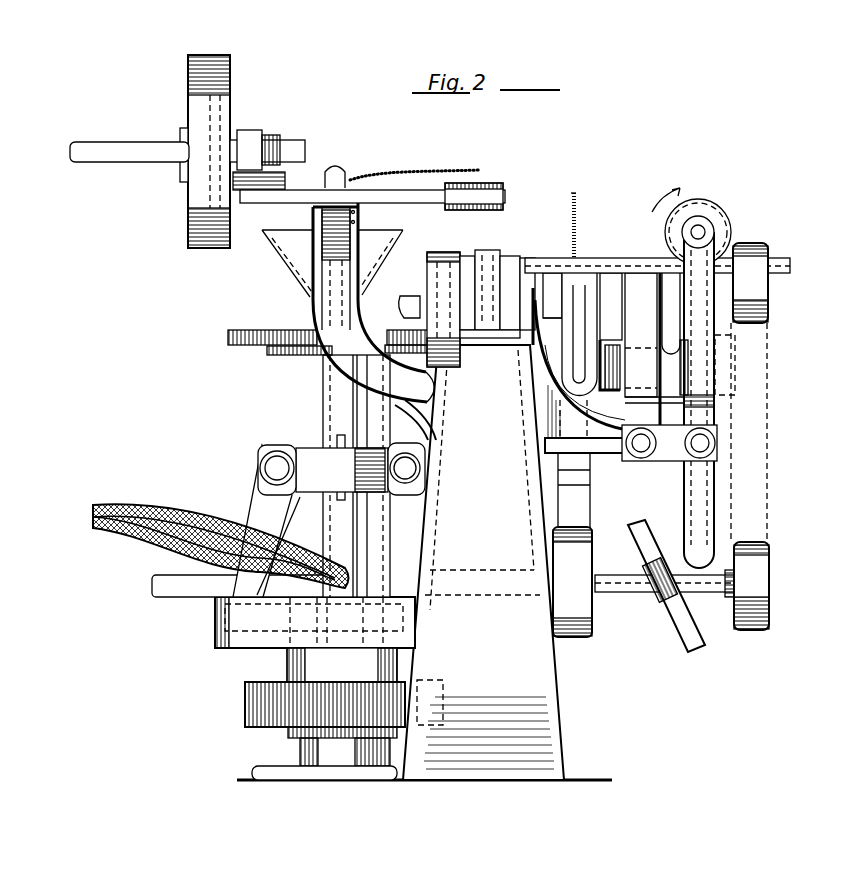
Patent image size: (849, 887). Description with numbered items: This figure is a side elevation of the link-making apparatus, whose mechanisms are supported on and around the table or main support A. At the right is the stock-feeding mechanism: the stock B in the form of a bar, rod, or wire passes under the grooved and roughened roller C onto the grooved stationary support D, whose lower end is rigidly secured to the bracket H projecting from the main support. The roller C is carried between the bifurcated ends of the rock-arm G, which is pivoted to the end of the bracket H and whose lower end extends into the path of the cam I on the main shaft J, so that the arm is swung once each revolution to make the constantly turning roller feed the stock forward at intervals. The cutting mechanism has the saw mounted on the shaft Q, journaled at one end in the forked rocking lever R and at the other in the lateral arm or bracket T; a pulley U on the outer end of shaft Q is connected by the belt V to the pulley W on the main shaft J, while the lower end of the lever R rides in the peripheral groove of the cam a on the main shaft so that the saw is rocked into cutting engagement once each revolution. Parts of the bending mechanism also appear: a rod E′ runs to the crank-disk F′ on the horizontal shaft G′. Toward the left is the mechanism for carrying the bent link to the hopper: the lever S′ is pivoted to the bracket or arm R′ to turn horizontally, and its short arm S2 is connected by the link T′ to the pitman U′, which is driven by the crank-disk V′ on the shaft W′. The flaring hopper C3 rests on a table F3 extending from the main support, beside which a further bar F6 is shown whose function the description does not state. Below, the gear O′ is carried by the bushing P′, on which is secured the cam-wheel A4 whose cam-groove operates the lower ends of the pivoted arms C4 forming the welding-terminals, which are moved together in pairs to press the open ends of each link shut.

The bracket H is at (533, 413).
The cam-wheel A4 is at (216, 628).
The bushing P′ is at (342, 665).
The gear O′ is at (246, 712).
The main shaft J is at (152, 580).
The table F3 is at (268, 352).
The bar F6 is at (292, 330).
The hopper C3 is at (282, 250).
The bracket or arm R′ is at (318, 262).
The short arm S2 is at (259, 201).
The link T′ is at (290, 180).
The lever S′ is at (400, 190).
The crank-disk V′ is at (231, 86).
The shaft W′ is at (122, 130).
The pitman U′ is at (260, 134).
The pivoted arms C4 is at (456, 556).
The table or main support A is at (292, 546).
The rod E′ is at (460, 348).
The horizontal shaft G′ is at (408, 298).
The rocking lever R is at (548, 276).
The stock B is at (608, 280).
The shaft Q is at (614, 282).
The stationary support D is at (640, 290).
The lateral arm or bracket T is at (720, 348).
The roller C is at (716, 215).
The rock-arm G is at (715, 400).
The crank-disk F′ is at (706, 236).
The cam I is at (650, 530).
The pulley U is at (760, 300).
The pulley W is at (770, 579).
The belt V is at (768, 415).
The cam a is at (590, 637).